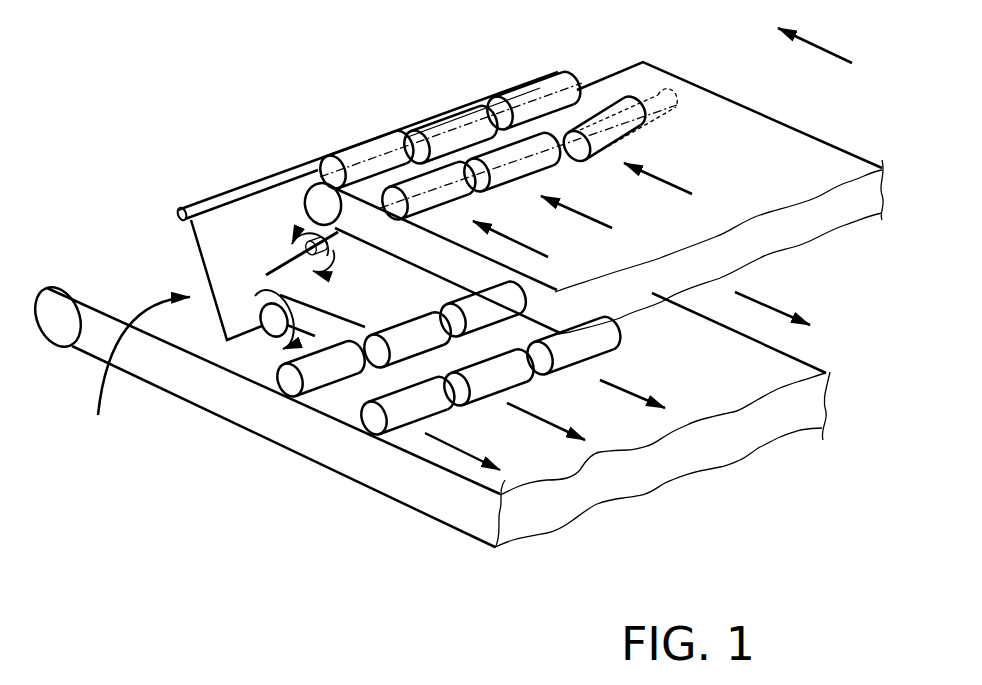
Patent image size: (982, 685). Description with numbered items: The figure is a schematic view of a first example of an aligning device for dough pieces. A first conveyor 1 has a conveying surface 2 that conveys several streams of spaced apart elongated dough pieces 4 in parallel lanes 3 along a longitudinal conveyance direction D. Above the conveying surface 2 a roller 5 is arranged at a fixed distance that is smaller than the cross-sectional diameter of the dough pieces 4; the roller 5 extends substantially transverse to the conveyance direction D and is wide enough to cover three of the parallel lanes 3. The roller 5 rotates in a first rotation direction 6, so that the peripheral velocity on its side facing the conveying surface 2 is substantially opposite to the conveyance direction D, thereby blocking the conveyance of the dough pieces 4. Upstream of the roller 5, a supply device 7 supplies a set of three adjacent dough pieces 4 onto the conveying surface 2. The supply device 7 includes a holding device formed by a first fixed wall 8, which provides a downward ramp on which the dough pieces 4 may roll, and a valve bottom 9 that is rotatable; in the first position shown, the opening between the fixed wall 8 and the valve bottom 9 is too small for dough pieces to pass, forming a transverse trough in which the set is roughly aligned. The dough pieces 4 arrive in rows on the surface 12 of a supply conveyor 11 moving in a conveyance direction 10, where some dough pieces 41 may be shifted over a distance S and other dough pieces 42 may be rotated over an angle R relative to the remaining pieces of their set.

The first conveyor 1 is at (372, 472).
The conveying surface 2 is at (122, 277).
The parallel lanes 3 is at (552, 432).
The dough pieces 4 is at (360, 150).
The roller 5 is at (275, 330).
The first rotation direction 6 is at (278, 352).
The supply device 7 is at (138, 372).
The first fixed wall 8 is at (232, 228).
The valve bottom 9 is at (268, 272).
The conveyance direction 10 is at (815, 37).
The supply conveyor 11 is at (813, 225).
The surface of the supply conveyor 12 is at (813, 157).
The shifted dough pieces 41 is at (453, 118).
The rotated dough pieces 42 is at (617, 145).
The distance S is at (417, 150).
The angle R is at (660, 97).
The longitudinal conveyance direction D is at (772, 301).